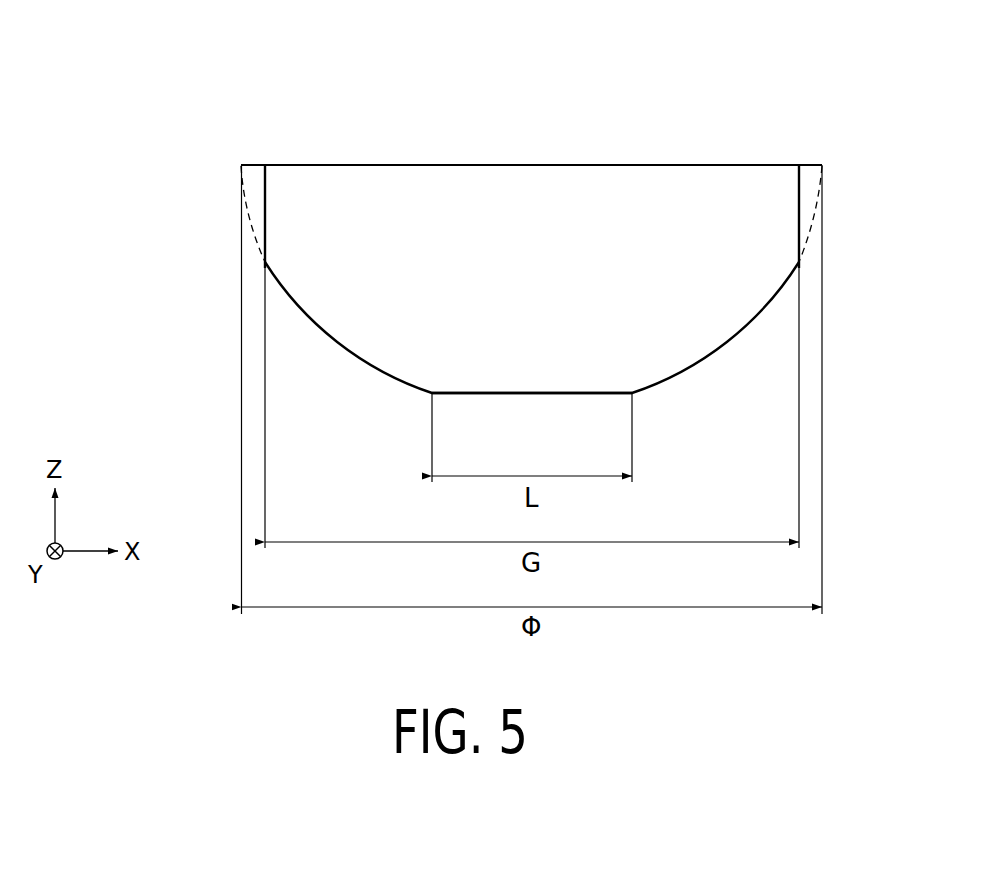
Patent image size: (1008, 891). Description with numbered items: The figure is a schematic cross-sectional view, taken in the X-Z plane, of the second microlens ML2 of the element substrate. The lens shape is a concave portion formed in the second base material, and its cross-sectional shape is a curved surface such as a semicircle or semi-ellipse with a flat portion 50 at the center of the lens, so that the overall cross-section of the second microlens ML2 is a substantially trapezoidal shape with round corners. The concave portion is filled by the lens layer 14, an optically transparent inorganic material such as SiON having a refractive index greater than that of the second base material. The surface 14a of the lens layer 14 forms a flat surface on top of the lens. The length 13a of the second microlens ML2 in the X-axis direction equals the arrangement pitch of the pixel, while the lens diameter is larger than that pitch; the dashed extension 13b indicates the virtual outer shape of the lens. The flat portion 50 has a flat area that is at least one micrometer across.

The second microlens ML2 is at (772, 111).
The length in the X-axis direction of the second microlens 13a is at (267, 262).
The virtual lens surface extension 13b is at (250, 165).
The lens layer 14 is at (785, 193).
The surface of the lens layer 14a is at (333, 164).
The flat portion 50 is at (524, 394).